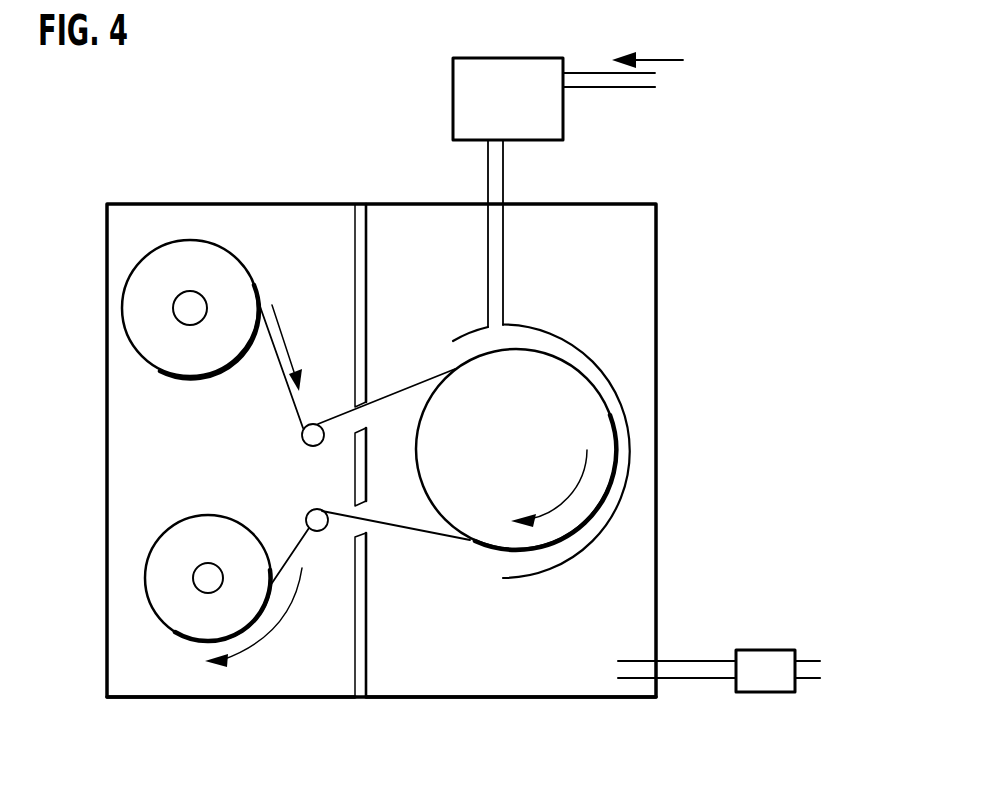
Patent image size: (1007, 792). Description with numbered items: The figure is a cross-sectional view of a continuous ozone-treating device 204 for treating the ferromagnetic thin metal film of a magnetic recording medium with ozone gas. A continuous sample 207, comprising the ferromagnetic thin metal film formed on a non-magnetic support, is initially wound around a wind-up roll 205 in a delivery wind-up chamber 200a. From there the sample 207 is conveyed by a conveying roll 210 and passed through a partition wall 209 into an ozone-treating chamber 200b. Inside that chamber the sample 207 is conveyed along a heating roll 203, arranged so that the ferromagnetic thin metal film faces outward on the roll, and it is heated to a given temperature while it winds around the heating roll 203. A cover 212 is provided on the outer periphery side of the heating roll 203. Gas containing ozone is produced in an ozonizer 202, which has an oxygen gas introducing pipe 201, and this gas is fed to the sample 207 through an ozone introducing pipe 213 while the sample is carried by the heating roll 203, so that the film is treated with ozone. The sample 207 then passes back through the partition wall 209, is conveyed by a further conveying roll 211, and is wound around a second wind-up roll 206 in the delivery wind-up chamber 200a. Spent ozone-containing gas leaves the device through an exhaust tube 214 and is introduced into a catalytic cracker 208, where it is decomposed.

The delivery wind-up chamber 200a is at (236, 683).
The ozone-treating chamber 200b is at (472, 683).
The oxygen gas introducing pipe 201 is at (668, 60).
The ozonizer 202 is at (508, 70).
The heating roll 203 is at (526, 414).
The continuous ozone-treating device 204 is at (658, 276).
The wind-up roll 205 is at (238, 272).
The wind-up roll 206 is at (191, 528).
The continuous sample 207 is at (292, 400).
The catalytic cracker 208 is at (772, 657).
The partition wall 209 is at (364, 278).
The conveying roll 210 is at (303, 433).
The conveying roll 211 is at (309, 515).
The cover 212 is at (598, 356).
The ozone introducing pipe 213 is at (502, 272).
The exhaust tube 214 is at (693, 668).